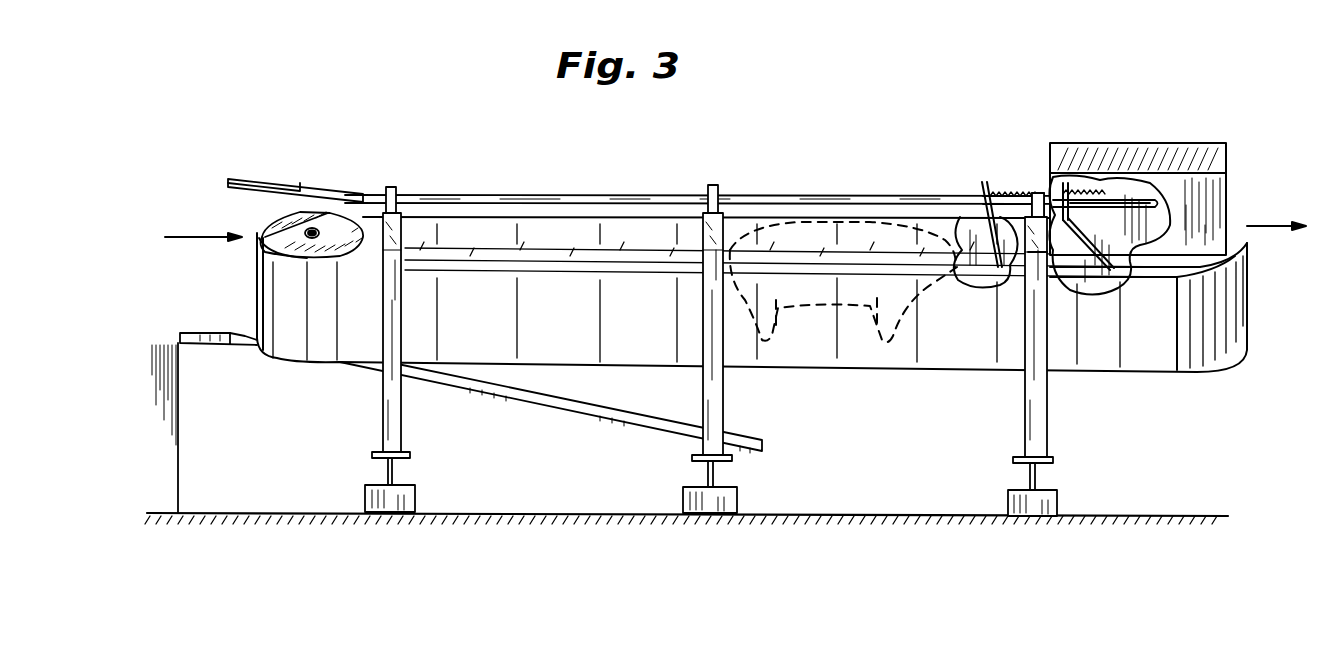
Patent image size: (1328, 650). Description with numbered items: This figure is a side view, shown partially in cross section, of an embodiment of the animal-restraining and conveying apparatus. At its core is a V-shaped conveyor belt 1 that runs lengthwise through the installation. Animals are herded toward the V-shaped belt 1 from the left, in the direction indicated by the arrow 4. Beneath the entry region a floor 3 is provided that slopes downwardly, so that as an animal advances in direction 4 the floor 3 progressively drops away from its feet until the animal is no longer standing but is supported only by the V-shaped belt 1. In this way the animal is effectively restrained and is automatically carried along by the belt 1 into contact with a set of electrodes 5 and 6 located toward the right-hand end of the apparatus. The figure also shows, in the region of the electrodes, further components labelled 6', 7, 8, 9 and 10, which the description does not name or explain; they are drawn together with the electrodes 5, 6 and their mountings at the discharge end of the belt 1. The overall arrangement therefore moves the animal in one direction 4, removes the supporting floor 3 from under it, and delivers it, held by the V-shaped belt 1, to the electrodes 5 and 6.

The V-shaped conveyor belt 1 is at (347, 217).
The floor 3 is at (596, 420).
The direction of movement 4 is at (200, 236).
The electrode 5 is at (992, 200).
The electrode 6 is at (1072, 163).
The inclined arm 6' is at (1088, 250).
The inclined pin 7 is at (985, 215).
The support post head 8 is at (1038, 195).
The teeth 9 is at (1008, 194).
The horizontal rod 10 is at (1090, 185).